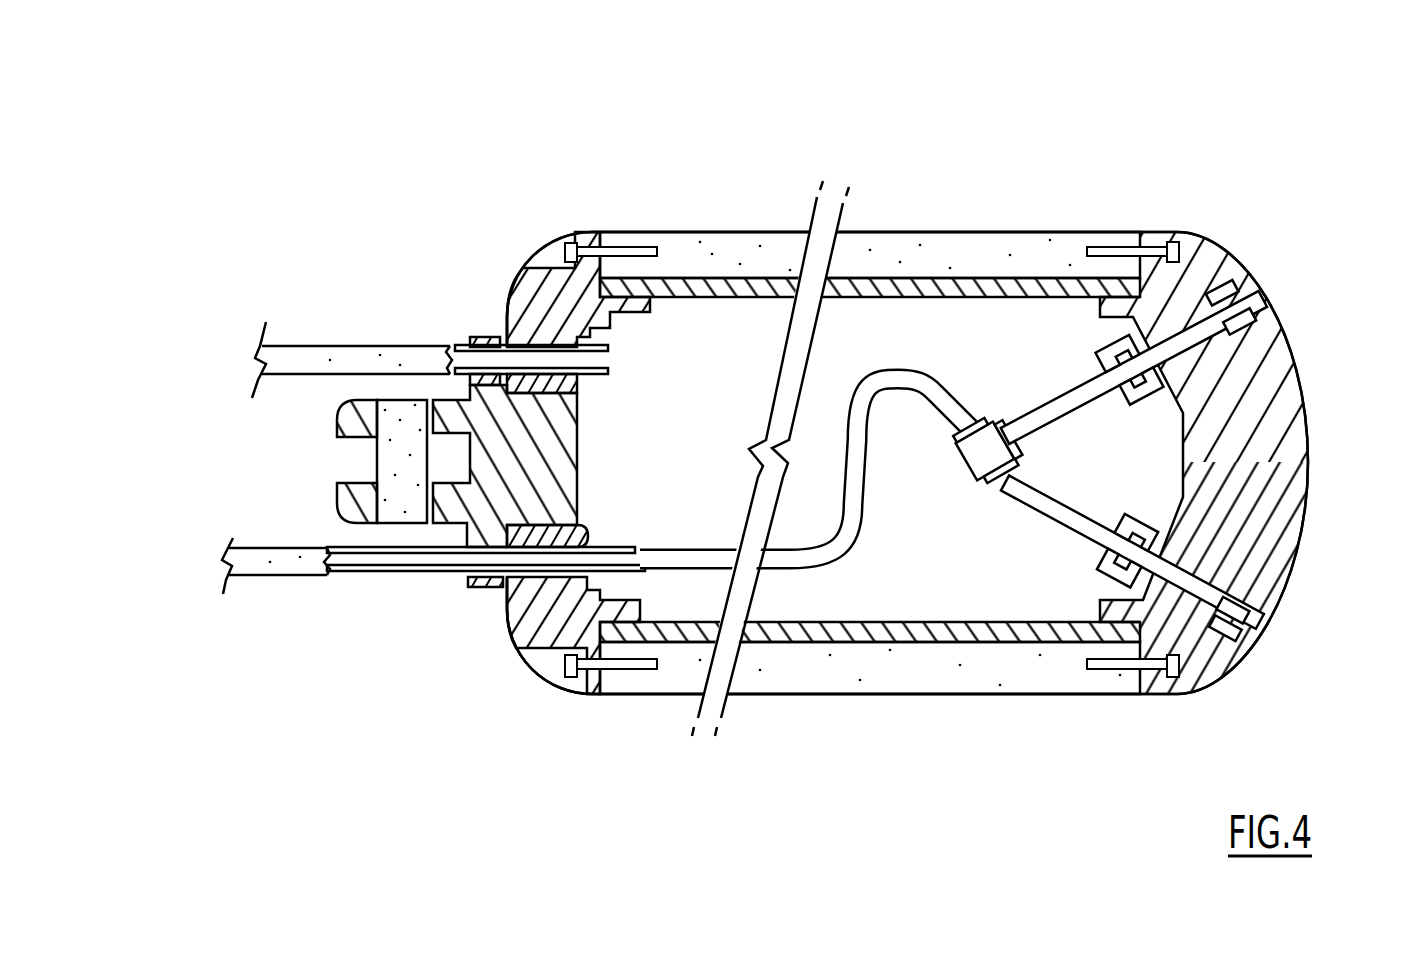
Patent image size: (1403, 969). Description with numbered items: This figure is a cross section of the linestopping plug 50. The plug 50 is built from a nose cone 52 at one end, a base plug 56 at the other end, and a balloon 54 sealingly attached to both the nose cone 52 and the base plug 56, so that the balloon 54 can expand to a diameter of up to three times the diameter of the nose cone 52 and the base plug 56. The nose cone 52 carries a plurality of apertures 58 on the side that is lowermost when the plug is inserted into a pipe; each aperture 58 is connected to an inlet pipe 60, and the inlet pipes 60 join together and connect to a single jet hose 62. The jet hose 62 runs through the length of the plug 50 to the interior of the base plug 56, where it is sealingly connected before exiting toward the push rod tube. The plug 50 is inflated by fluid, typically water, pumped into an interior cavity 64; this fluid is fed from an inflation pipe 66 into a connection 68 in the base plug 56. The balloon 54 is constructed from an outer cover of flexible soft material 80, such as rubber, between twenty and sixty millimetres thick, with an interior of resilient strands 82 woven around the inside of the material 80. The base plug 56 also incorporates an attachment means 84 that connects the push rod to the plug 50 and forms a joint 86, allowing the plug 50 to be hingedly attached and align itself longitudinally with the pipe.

The plug 50 is at (998, 166).
The nose cone 52 is at (1292, 362).
The balloon 54 is at (1062, 183).
The base plug 56 is at (507, 300).
The apertures 58 is at (1250, 297).
The inlet pipes 60 is at (1057, 393).
The jet hose 62 is at (918, 368).
The interior cavity 64 is at (680, 303).
The inflation pipe 66 is at (377, 343).
The connection 68 is at (490, 333).
The flexible soft material 80 is at (683, 332).
The resilient strands 82 is at (770, 287).
The attachment means 84 is at (317, 412).
The joint 86 is at (385, 467).